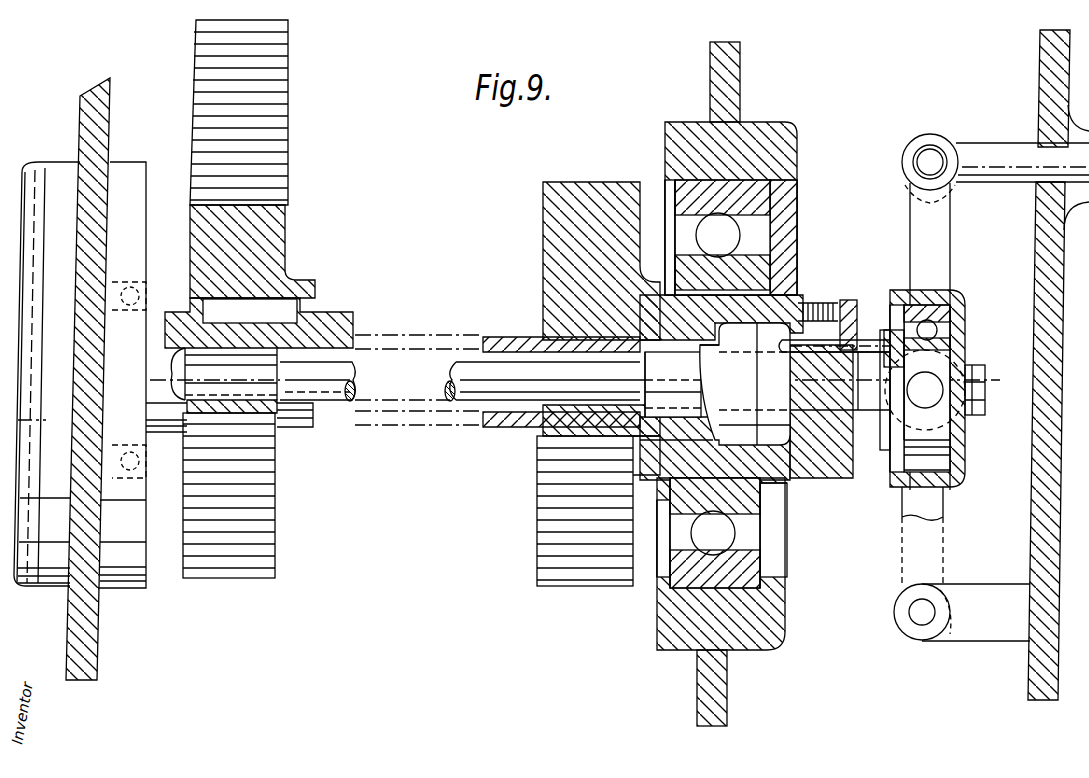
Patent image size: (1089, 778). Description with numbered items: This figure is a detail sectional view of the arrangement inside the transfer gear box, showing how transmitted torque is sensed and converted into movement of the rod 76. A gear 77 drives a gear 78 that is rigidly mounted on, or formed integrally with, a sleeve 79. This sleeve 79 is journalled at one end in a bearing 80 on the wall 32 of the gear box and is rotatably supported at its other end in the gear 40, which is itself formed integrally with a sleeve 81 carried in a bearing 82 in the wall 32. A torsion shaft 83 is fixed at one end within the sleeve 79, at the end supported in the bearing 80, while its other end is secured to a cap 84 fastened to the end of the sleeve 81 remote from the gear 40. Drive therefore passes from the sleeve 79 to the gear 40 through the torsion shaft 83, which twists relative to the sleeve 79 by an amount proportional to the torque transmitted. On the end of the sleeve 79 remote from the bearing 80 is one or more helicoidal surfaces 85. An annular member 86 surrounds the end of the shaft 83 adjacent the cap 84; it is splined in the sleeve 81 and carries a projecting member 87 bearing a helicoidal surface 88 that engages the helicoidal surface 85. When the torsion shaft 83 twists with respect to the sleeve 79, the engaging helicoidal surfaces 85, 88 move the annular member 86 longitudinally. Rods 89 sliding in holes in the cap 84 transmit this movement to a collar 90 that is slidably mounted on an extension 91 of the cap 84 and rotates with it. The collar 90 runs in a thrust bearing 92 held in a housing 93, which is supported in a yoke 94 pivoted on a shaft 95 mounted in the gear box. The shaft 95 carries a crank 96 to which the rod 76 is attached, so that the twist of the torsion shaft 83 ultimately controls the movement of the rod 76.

The wall 32 is at (100, 125).
The gear 40 is at (551, 270).
The rod 76 is at (1006, 152).
The gear 77 is at (268, 147).
The gear 78 is at (258, 248).
The sleeve 79 is at (322, 338).
The bearing 80 is at (140, 470).
The sleeve 81 is at (796, 278).
The bearing 82 is at (735, 238).
The torsion shaft 83 is at (358, 345).
The cap 84 is at (843, 298).
The helicoidal surface 85 is at (691, 381).
The annular member 86 is at (805, 482).
The projecting member 87 is at (787, 505).
The helicoidal surface 88 is at (712, 394).
The rods 89 is at (864, 340).
The collar 90 is at (891, 448).
The extension 91 is at (978, 365).
The thrust bearing 92 is at (962, 297).
The housing 93 is at (950, 487).
The yoke 94 is at (948, 433).
The shaft 95 is at (926, 602).
The crank 96 is at (910, 212).